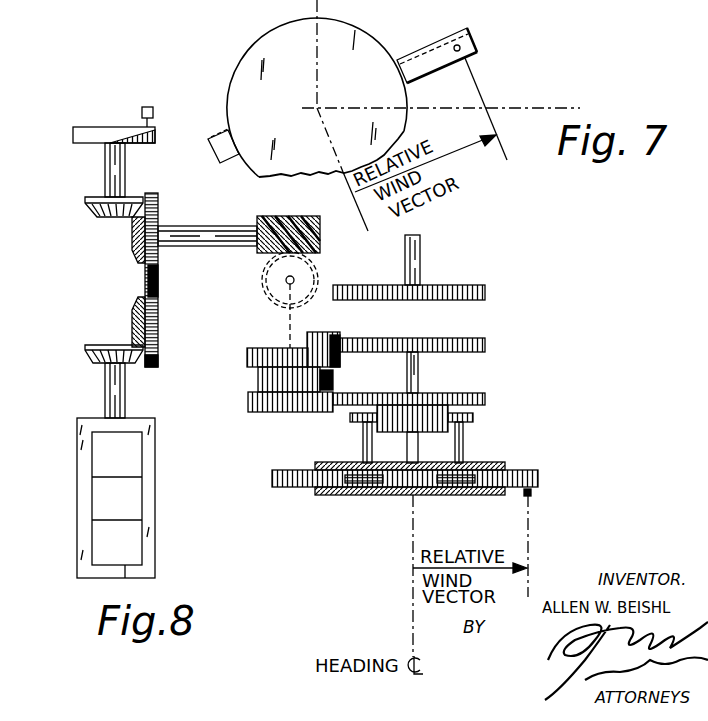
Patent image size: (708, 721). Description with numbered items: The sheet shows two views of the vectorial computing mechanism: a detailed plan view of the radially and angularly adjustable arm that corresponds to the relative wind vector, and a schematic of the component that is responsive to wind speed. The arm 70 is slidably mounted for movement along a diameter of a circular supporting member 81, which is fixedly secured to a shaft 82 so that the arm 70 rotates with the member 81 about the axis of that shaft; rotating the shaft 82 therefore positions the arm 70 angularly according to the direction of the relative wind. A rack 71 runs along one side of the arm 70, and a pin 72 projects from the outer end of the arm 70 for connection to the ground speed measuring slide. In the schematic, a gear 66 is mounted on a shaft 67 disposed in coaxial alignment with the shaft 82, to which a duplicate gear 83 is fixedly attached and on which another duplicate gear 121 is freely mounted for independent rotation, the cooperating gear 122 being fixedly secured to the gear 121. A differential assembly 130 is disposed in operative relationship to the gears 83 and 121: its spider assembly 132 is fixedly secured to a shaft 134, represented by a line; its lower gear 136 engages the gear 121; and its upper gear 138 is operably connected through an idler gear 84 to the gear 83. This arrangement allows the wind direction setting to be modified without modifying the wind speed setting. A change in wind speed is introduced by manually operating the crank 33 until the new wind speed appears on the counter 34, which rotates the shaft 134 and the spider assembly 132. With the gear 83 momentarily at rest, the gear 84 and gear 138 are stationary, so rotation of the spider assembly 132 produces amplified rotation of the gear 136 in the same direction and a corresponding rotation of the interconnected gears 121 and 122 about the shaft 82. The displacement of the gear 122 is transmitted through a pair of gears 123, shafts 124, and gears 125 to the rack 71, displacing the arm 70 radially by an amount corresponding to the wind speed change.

In FIG. 8, the crank 33 is at (97, 132).
In FIG. 8, the counter 34 is at (82, 500).
In FIG. 8, the gear 66 is at (435, 288).
In FIG. 8, the shaft 67 is at (415, 258).
In FIG. 7, the arm 70 is at (418, 70).
In FIG. 8, the arm 70 is at (298, 490).
In FIG. 7, the rack 71 is at (438, 42).
In FIG. 8, the rack 71 is at (518, 480).
In FIG. 7, the pin 72 is at (470, 37).
In FIG. 8, the pin 72 is at (530, 497).
In FIG. 7, the circular supporting member 81 is at (275, 40).
In FIG. 8, the circular supporting member 81 is at (343, 495).
In FIG. 8, the shaft 82 is at (415, 375).
In FIG. 8, the duplicate gear 83 is at (393, 345).
In FIG. 8, the idler gear 84 is at (327, 333).
In FIG. 8, the duplicate gear 121 is at (487, 398).
In FIG. 8, the cooperating gear 122 is at (430, 432).
In FIG. 8, the gears 123 is at (352, 418).
In FIG. 8, the shafts 124 is at (363, 442).
In FIG. 8, the gears 125 is at (375, 495).
In FIG. 8, the differential assembly 130 is at (242, 421).
In FIG. 8, the spider assembly 132 is at (277, 378).
In FIG. 8, the shaft 134 is at (287, 325).
In FIG. 8, the lower gear 136 is at (289, 412).
In FIG. 8, the upper gear 138 is at (248, 356).